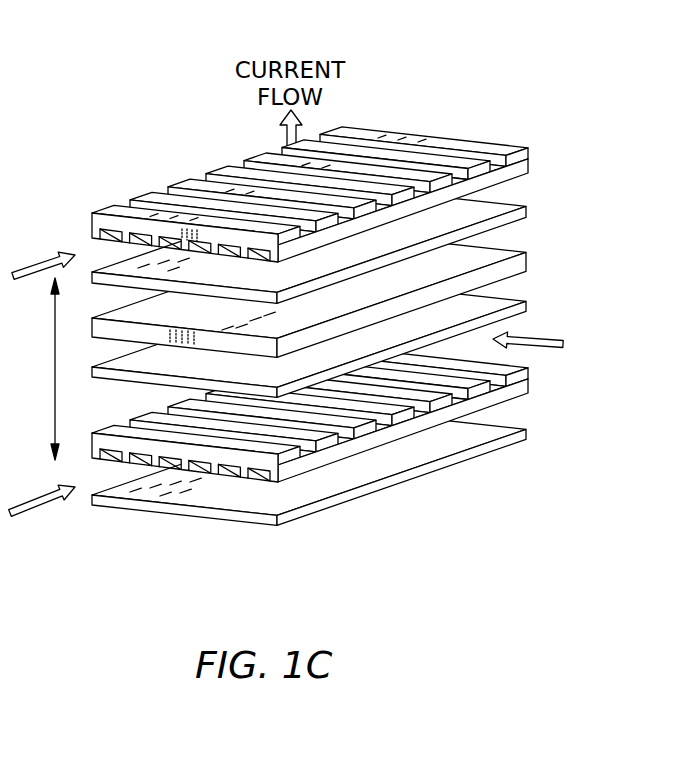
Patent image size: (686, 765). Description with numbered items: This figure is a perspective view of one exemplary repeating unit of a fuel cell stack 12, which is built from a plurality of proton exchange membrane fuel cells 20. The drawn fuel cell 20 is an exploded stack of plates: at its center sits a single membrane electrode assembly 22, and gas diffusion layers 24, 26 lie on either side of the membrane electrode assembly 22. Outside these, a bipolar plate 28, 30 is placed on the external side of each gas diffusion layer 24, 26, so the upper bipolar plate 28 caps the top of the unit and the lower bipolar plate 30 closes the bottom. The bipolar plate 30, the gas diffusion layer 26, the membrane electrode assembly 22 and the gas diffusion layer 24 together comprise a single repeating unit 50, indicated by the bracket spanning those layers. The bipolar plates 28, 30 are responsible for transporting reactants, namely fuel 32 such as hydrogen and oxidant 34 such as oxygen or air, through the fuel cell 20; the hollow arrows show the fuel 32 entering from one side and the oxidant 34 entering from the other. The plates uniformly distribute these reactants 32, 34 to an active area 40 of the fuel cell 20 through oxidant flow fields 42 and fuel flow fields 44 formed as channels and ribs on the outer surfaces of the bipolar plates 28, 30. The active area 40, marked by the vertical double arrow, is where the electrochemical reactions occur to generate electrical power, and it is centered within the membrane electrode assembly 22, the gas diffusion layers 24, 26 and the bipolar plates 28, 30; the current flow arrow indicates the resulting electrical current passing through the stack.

The fuel cell stack 12 is at (136, 134).
The fuel cell 20 is at (367, 298).
The membrane electrode assembly 22 is at (545, 261).
The gas diffusion layer 24 is at (545, 211).
The gas diffusion layer 26 is at (545, 307).
The bipolar plate 28 is at (356, 299).
The bipolar plate 30 is at (545, 379).
The fuel 32 is at (541, 337).
The oxidant 34 is at (32, 276).
The active area 40 is at (47, 377).
The oxidant flow fields 42 is at (135, 483).
The fuel flow fields 44 is at (426, 122).
The single repeating unit 50 is at (627, 180).